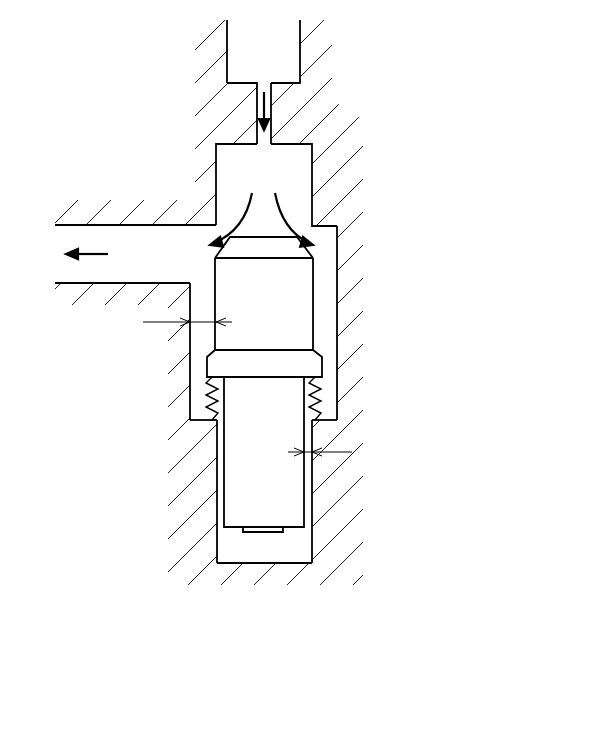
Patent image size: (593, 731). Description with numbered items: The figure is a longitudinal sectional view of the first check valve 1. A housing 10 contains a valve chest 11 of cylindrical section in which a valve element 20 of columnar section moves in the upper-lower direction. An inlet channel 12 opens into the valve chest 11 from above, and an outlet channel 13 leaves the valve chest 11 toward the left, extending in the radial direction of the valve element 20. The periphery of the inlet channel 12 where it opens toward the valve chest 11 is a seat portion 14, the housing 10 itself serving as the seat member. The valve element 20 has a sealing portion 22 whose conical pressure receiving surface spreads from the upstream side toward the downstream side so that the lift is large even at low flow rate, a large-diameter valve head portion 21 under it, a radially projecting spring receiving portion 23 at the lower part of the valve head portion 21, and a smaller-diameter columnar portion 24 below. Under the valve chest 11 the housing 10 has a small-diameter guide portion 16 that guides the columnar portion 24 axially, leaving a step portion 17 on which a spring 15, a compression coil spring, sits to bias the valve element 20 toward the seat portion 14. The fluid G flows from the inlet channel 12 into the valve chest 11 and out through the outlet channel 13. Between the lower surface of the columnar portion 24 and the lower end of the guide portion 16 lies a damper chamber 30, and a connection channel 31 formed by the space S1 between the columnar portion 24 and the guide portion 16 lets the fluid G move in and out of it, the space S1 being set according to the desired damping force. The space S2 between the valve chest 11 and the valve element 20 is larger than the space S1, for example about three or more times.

The first check valve 1 is at (452, 170).
The housing 10 is at (394, 360).
The valve chest 11 is at (318, 292).
The inlet channel 12 is at (280, 175).
The outlet channel 13 is at (142, 242).
The seat portion 14 is at (312, 216).
The spring 15 is at (318, 408).
The guide portion 16 is at (226, 558).
The step portion 17 is at (190, 404).
The valve element 20 is at (243, 427).
The valve head portion 21 is at (272, 312).
The sealing portion 22 is at (310, 247).
The spring receiving portion 23 is at (317, 388).
The columnar portion 24 is at (272, 470).
The damper chamber 30 is at (282, 544).
The connection channel 31 is at (315, 510).
The fluid G is at (237, 218).
The space S1 is at (336, 452).
The space S2 is at (172, 323).